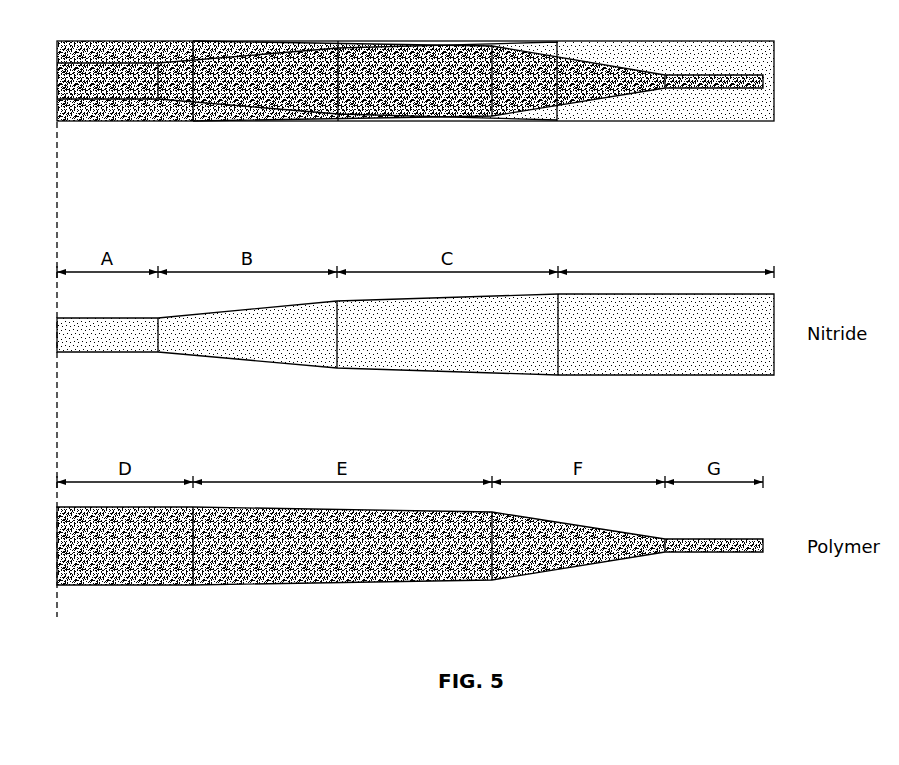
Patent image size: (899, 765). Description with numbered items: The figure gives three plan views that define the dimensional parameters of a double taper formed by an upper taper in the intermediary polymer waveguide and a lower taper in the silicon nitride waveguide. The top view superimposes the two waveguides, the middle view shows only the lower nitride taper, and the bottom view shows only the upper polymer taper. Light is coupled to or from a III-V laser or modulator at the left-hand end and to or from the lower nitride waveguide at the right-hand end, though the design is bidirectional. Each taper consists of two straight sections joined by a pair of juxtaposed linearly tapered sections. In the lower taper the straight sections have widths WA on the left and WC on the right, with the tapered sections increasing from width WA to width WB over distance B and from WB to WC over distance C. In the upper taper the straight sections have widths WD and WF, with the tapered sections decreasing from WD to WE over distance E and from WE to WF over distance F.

The left straight section width of lower taper WA is at (176, 335).
The intermediate width of lower taper WB is at (354, 334).
The right straight section width of lower taper WC is at (576, 334).
The left straight section width of upper taper WD is at (213, 546).
The intermediate width of upper taper WE is at (510, 546).
The right straight section width of upper taper WF is at (679, 557).